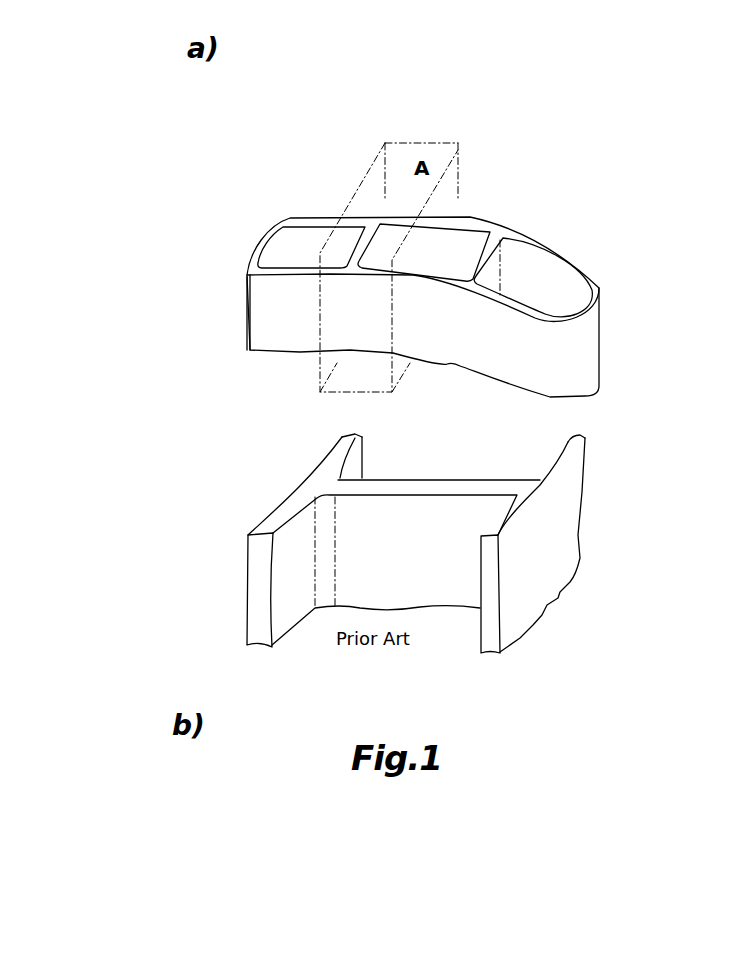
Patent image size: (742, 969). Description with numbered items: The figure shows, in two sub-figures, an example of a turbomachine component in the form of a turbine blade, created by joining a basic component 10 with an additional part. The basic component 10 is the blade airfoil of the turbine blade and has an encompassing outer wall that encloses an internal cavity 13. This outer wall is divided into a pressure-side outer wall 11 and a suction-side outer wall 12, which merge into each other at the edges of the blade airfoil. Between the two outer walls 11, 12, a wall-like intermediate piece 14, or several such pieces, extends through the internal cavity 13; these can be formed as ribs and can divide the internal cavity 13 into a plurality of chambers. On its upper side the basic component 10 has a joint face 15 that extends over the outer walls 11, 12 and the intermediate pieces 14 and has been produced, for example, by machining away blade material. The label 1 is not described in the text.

The joint face 15 is at (312, 222).
The basic component 10 is at (268, 293).
The pressure-side outer wall 11 is at (283, 322).
The suction-side outer wall 12 is at (557, 350).
The internal cavity 13 is at (545, 293).
The wall-like intermediate piece 14 is at (493, 280).
The label (cut off at sheet edge) 1 is at (734, 473).